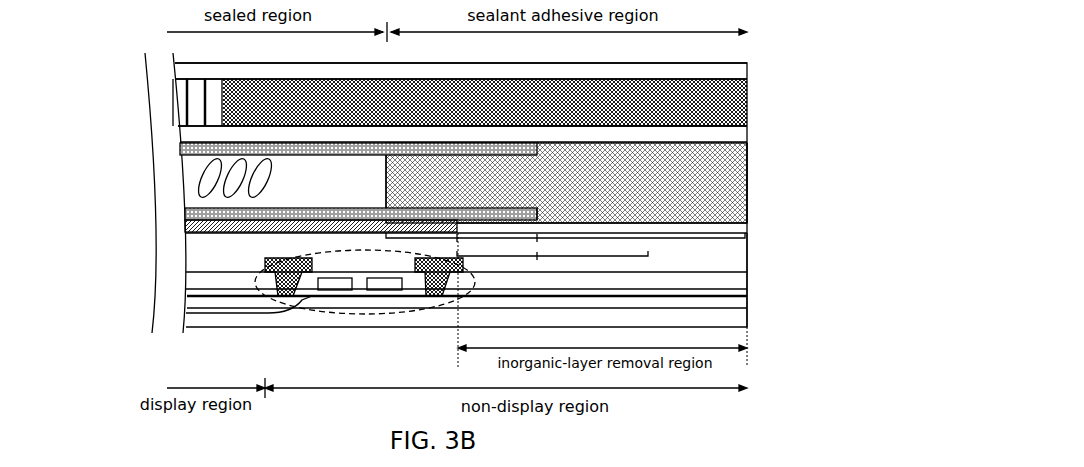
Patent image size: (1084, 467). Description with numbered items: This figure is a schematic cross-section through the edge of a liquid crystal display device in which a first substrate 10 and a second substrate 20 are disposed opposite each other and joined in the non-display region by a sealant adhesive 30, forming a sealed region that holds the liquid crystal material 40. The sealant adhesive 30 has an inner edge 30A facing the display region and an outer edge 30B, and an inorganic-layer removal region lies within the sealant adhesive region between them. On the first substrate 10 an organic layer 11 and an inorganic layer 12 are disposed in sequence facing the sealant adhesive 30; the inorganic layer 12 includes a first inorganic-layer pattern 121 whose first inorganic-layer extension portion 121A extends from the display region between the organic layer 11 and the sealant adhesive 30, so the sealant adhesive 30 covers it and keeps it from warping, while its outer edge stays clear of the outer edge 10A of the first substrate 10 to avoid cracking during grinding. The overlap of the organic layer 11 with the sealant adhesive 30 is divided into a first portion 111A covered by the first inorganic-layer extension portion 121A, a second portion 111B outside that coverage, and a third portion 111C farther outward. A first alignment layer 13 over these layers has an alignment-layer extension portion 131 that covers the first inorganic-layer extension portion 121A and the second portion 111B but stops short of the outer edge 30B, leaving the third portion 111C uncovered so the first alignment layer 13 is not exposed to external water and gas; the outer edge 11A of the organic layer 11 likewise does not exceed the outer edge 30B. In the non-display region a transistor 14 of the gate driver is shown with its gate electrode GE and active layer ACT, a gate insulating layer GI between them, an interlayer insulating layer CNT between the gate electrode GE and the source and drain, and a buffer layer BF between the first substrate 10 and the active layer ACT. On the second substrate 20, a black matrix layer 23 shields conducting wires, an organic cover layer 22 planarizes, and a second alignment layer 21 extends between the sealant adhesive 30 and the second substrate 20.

The second substrate 20 is at (718, 71).
The black matrix layer 23 is at (735, 101).
The organic cover layer 22 is at (728, 134).
The sealant adhesive 30 is at (697, 159).
The inner edge 30A is at (386, 185).
The outer edge 30B is at (748, 175).
The second alignment layer 21 is at (180, 148).
The liquid crystal material 40 is at (200, 179).
The first alignment layer 13 is at (185, 213).
The alignment-layer extension portion 131 is at (541, 216).
The inorganic layer 12 is at (409, 229).
The first inorganic-layer pattern 121 is at (185, 229).
The first inorganic-layer extension portion 121A is at (747, 224).
The organic layer 11 is at (205, 258).
The outer edge 11A is at (747, 253).
The first portion 111A is at (421, 243).
The second portion 111B is at (497, 243).
The third portion 111C is at (641, 243).
The first substrate 10 is at (372, 353).
The outer edge 10A is at (747, 317).
The transistor 14 is at (365, 305).
The active layer ACT is at (186, 313).
The gate electrode GE is at (360, 284).
The interlayer insulating layer CNT is at (719, 282).
The gate insulating layer GI is at (720, 292).
The buffer layer BF is at (719, 303).